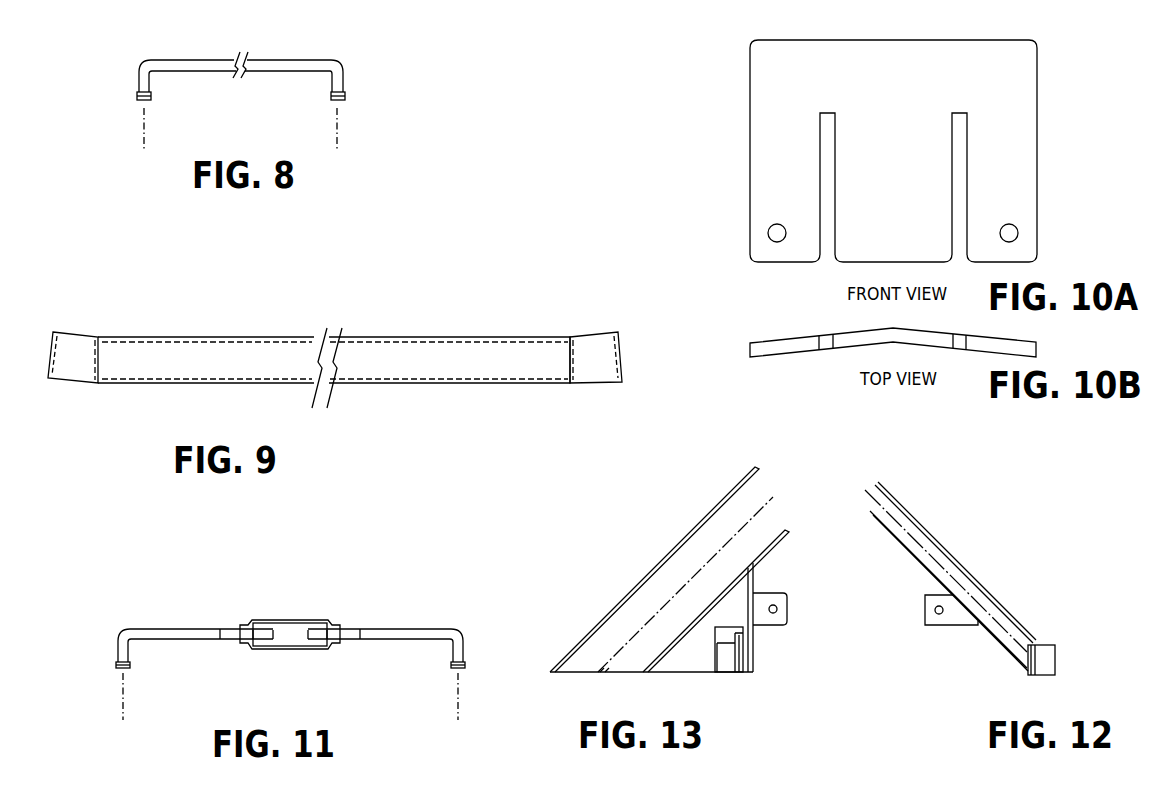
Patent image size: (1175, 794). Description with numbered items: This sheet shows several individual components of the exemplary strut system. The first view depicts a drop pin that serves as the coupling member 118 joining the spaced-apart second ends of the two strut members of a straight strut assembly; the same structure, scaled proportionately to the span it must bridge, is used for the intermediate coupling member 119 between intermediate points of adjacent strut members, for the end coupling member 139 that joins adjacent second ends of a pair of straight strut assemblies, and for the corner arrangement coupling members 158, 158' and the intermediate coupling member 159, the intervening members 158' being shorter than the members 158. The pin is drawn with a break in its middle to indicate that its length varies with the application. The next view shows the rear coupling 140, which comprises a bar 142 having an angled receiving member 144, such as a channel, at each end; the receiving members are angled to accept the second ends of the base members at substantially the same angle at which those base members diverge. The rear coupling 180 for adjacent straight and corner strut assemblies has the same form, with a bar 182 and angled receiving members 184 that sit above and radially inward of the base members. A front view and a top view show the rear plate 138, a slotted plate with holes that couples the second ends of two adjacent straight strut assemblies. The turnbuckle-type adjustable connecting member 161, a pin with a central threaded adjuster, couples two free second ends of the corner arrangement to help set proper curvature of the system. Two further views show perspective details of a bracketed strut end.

In FIG. 8, the coupling member 118 is at (330, 86).
In FIG. 8, the intermediate coupling member 119 is at (330, 86).
In FIG. 8, the end coupling member 139 is at (330, 86).
In FIG. 8, the coupling member 158 is at (330, 86).
In FIG. 8, the coupling member 158' is at (330, 86).
In FIG. 8, the intermediate coupling member 159 is at (364, 53).
In FIG. 9, the rear coupling 140 is at (335, 329).
In FIG. 9, the rear coupling 180 is at (335, 329).
In FIG. 9, the bar 142 is at (334, 343).
In FIG. 9, the bar 182 is at (370, 358).
In FIG. 9, the angled receiving member 144 is at (592, 328).
In FIG. 9, the angled receiving member 184 is at (587, 355).
In FIG. 10A, the rear plate 138 is at (1023, 175).
In FIG. 11, the adjustable connecting member 161 is at (397, 606).